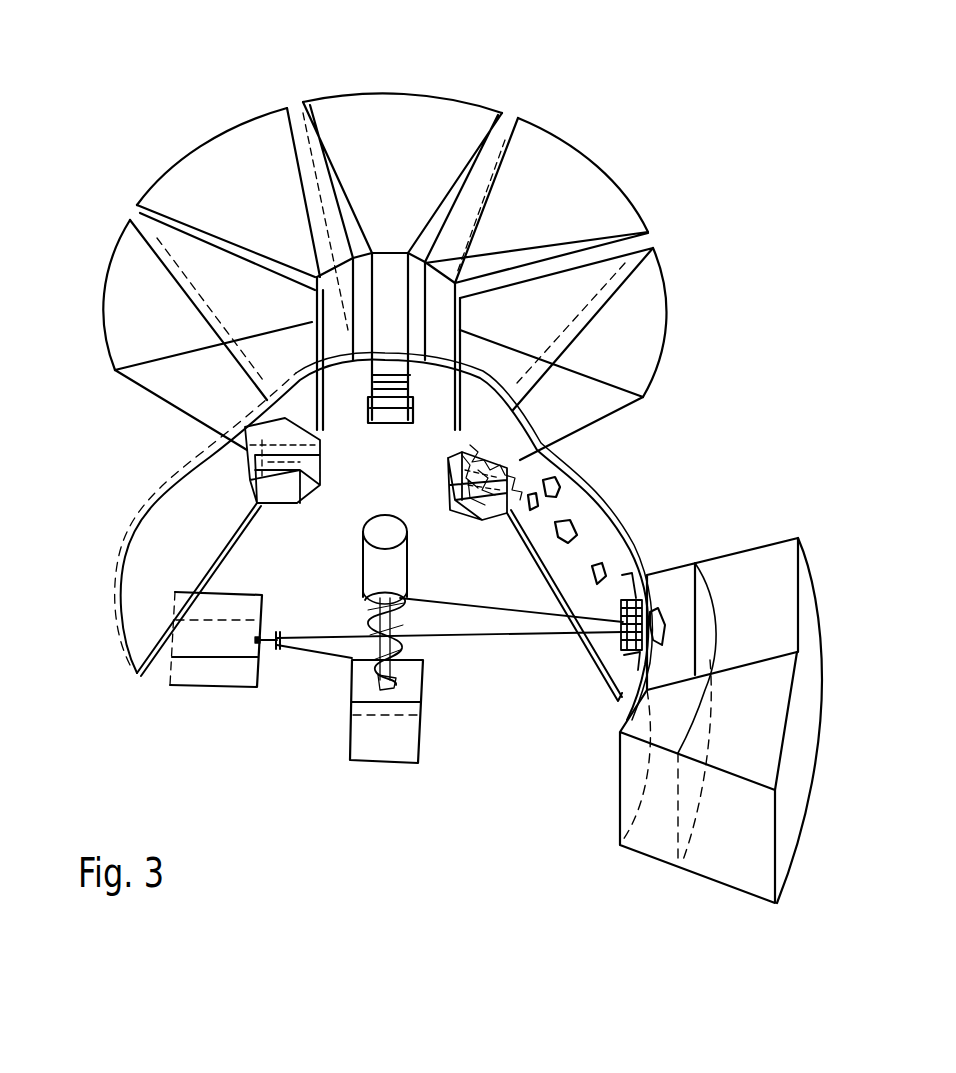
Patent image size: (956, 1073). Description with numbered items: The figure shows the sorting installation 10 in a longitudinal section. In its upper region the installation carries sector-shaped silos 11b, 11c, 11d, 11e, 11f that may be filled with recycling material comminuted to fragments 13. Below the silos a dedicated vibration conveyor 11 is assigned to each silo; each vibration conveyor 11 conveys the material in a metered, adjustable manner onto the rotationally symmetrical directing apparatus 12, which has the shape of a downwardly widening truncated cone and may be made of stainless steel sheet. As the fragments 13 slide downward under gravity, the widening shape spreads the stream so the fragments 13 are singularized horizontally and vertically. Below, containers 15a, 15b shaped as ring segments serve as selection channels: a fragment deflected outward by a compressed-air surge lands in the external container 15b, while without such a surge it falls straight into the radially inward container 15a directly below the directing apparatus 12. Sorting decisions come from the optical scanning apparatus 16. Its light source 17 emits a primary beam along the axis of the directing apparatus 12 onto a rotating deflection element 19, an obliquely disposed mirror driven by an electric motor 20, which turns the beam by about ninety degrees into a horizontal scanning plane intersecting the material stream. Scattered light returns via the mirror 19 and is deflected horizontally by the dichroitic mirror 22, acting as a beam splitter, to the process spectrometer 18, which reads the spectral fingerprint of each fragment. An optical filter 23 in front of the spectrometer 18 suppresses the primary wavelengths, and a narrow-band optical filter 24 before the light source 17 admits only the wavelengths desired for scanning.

The sorting installation 10 is at (750, 241).
The vibration conveyor 11 is at (440, 458).
The sector-shaped silo 11b is at (638, 312).
The sector-shaped silo 11c is at (565, 170).
The sector-shaped silo 11d is at (435, 108).
The sector-shaped silo 11e is at (252, 140).
The sector-shaped silo 11f is at (135, 255).
The directing apparatus 12 is at (150, 560).
The fragments 13 is at (625, 590).
The radially inward container 15a is at (642, 830).
The external container 15b is at (770, 553).
The optical scanning apparatus 16 is at (225, 773).
The light source 17 is at (362, 760).
The process spectrometer 18 is at (183, 678).
The rotating deflection element 19 is at (365, 600).
The electric motor 20 is at (400, 562).
The dichroitic mirror 22 is at (405, 648).
The optical filter 23 is at (281, 655).
The narrow-band optical filter 24 is at (400, 685).